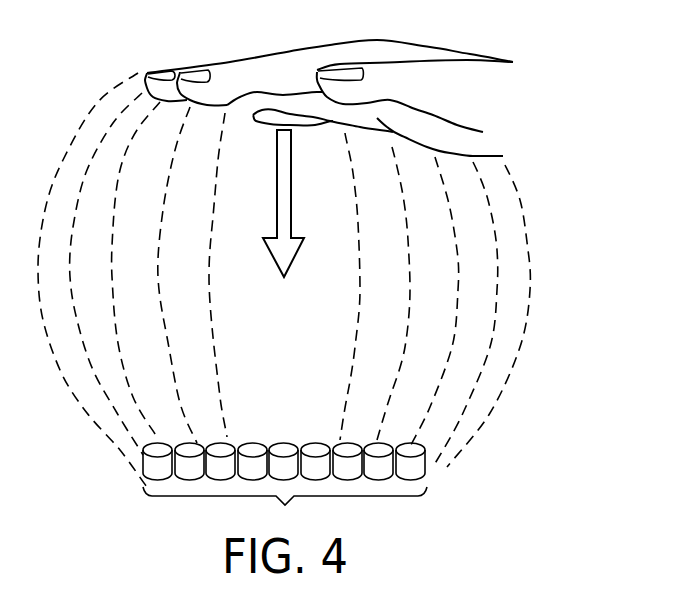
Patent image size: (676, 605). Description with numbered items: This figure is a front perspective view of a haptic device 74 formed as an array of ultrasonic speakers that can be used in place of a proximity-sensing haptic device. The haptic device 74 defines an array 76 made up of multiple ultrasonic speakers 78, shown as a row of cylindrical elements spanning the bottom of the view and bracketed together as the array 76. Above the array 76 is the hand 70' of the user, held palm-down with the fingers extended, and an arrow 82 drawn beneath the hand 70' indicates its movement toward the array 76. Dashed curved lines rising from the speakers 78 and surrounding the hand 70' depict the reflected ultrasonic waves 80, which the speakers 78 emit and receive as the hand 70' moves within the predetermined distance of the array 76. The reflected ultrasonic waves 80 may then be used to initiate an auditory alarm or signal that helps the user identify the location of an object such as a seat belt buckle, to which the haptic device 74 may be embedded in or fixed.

The hand 70' is at (329, 84).
The direction of movement arrow 82 is at (291, 200).
The reflected ultrasonic waves 80 is at (220, 390).
The ultrasonic speaker 78 is at (410, 450).
The haptic device 74 is at (340, 430).
The array 76 is at (285, 508).